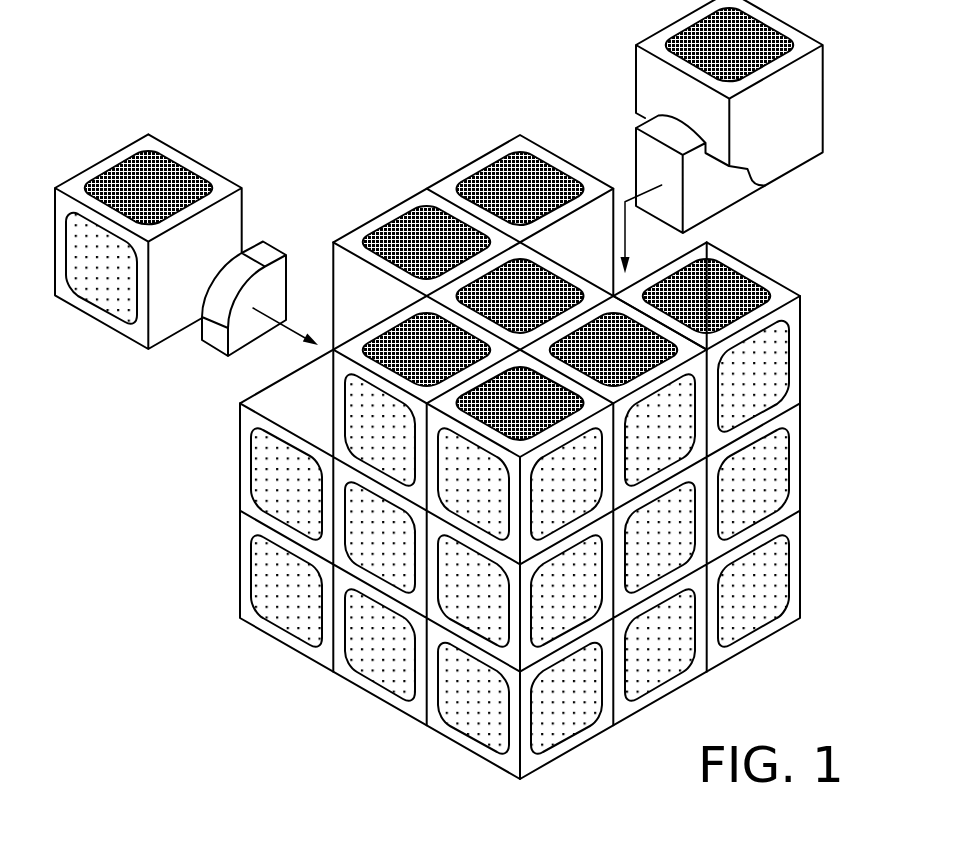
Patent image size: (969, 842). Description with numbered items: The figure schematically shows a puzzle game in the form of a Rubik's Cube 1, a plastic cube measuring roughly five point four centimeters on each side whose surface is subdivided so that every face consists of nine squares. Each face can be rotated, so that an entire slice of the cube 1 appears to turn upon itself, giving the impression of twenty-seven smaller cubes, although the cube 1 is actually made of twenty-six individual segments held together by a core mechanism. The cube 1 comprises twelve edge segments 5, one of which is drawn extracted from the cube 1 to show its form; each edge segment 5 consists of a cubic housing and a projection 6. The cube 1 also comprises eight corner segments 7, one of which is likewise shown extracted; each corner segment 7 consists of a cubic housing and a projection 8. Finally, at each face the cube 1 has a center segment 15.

The Rubik's Cube 1 is at (485, 457).
The edge segment 5 is at (785, 154).
The projection 6 is at (645, 158).
The corner segment 7 is at (102, 313).
The projection 8 is at (215, 338).
The center segment 15 is at (668, 527).